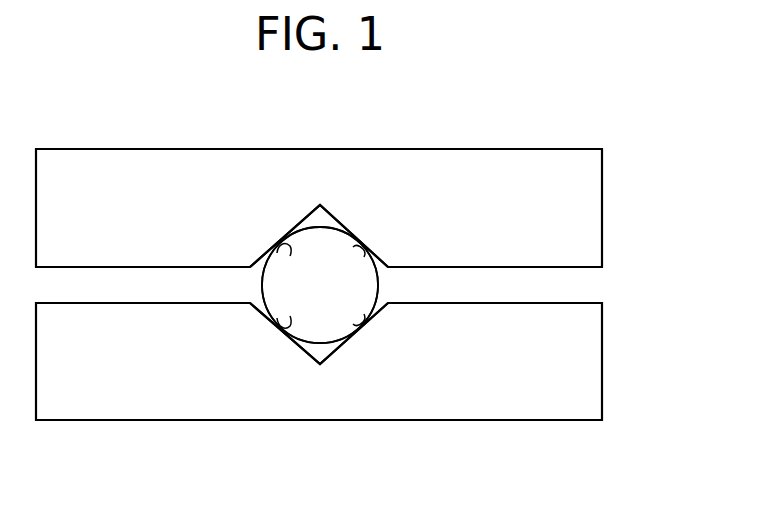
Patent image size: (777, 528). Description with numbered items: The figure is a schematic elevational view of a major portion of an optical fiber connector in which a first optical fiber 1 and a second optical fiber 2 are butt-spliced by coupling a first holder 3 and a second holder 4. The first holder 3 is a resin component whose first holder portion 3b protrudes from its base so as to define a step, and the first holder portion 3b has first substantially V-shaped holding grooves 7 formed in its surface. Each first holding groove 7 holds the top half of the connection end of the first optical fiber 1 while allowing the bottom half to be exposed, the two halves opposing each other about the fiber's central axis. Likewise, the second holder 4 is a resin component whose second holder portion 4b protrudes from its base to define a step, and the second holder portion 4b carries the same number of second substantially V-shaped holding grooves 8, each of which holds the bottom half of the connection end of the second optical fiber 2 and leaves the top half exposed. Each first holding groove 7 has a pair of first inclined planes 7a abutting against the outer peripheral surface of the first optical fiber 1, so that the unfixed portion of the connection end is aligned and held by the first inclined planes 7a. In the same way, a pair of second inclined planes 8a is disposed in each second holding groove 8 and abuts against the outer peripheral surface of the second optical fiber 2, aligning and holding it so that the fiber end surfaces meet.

The first optical fiber 1 is at (348, 247).
The second optical fiber 2 is at (320, 285).
The first holder 3 is at (605, 207).
The first holder portion 3b is at (524, 149).
The second holder 4 is at (605, 369).
The second holder portion 4b is at (525, 421).
The first substantially V-shaped holding groove 7 is at (317, 216).
The first inclined planes 7a is at (283, 243).
The second substantially V-shaped holding groove 8 is at (324, 364).
The second inclined planes 8a is at (286, 328).